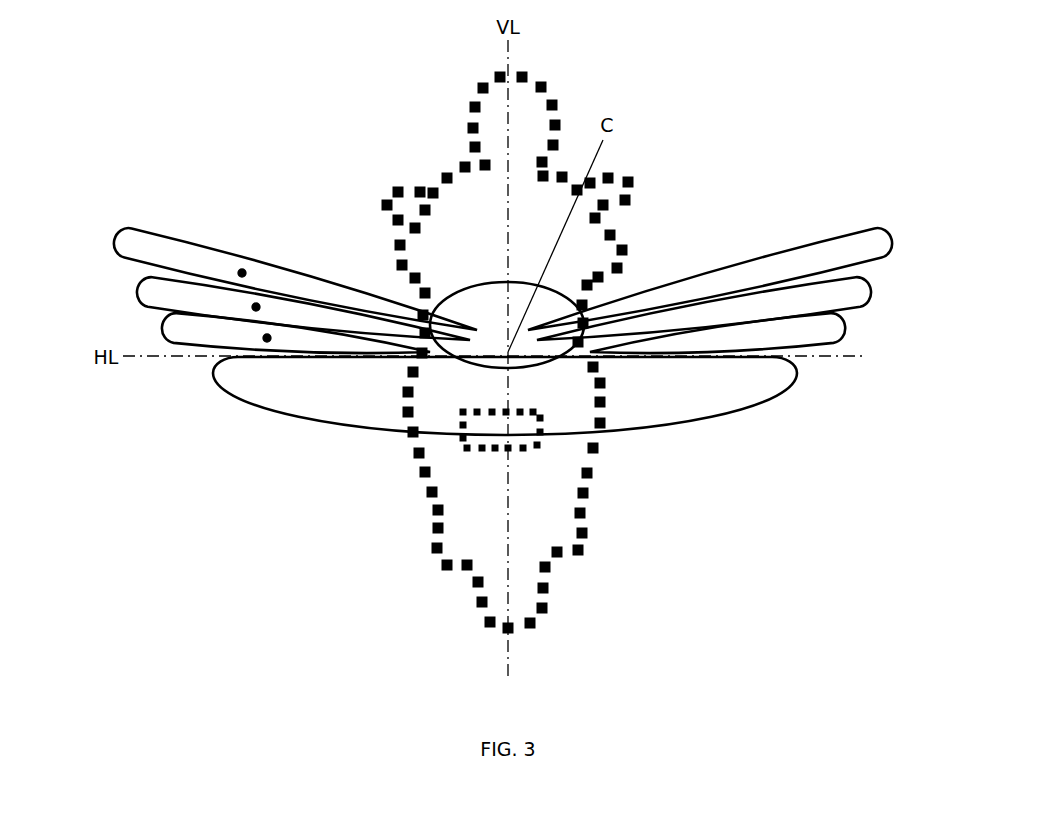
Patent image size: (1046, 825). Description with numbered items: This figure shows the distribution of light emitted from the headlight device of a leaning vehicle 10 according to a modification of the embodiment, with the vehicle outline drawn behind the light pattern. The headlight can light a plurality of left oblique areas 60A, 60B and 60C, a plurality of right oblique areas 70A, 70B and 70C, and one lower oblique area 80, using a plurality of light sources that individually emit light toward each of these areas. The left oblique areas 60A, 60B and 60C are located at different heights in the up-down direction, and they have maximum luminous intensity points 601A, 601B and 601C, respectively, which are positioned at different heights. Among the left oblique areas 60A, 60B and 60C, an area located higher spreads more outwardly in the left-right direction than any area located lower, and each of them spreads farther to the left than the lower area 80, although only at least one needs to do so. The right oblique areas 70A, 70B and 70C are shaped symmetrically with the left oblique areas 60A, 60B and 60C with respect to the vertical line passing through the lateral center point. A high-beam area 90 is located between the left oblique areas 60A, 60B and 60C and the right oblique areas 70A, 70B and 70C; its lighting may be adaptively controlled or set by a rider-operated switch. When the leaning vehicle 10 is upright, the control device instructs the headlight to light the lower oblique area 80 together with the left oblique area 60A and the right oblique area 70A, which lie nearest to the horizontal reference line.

The leaning vehicle 10 is at (622, 493).
The high-beam area 90 is at (565, 296).
The lower oblique area 80 is at (318, 425).
The left oblique area 60A is at (160, 325).
The left oblique area 60B is at (136, 289).
The left oblique area 60C is at (113, 243).
The right oblique area 70A is at (848, 327).
The right oblique area 70B is at (873, 288).
The right oblique area 70C is at (893, 238).
The maximum luminous intensity point 601A is at (267, 338).
The maximum luminous intensity point 601B is at (256, 307).
The maximum luminous intensity point 601C is at (242, 273).